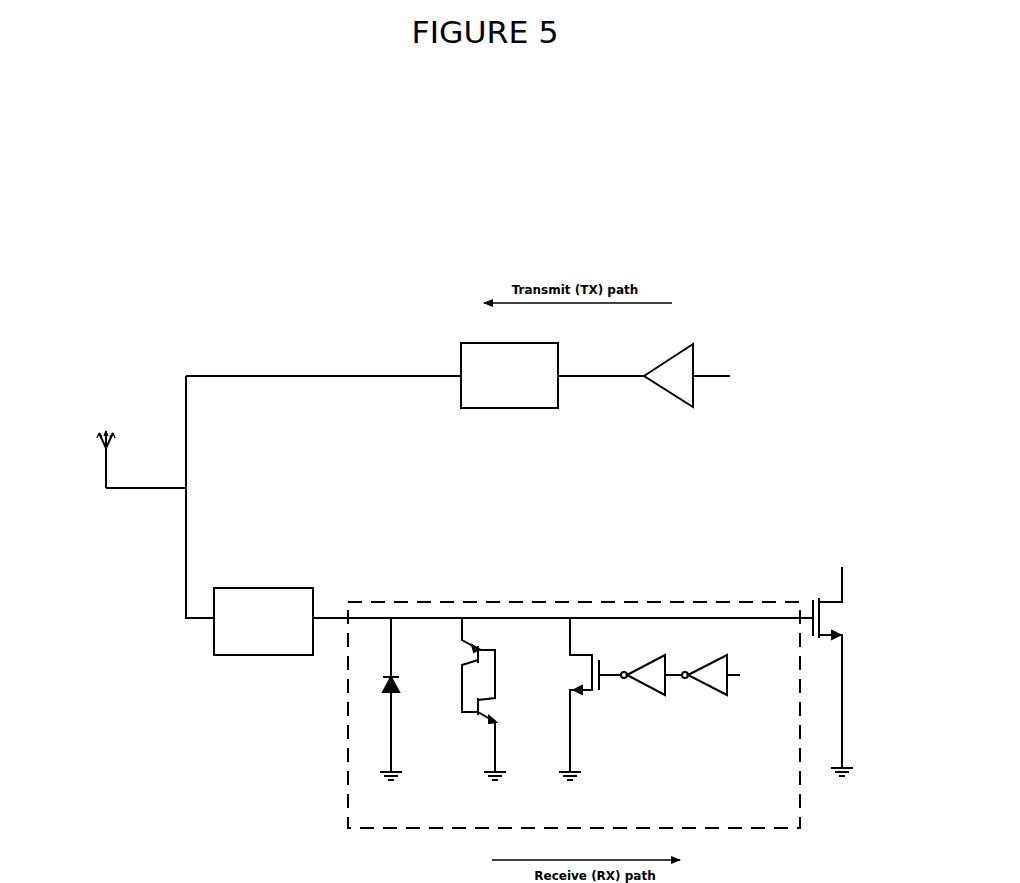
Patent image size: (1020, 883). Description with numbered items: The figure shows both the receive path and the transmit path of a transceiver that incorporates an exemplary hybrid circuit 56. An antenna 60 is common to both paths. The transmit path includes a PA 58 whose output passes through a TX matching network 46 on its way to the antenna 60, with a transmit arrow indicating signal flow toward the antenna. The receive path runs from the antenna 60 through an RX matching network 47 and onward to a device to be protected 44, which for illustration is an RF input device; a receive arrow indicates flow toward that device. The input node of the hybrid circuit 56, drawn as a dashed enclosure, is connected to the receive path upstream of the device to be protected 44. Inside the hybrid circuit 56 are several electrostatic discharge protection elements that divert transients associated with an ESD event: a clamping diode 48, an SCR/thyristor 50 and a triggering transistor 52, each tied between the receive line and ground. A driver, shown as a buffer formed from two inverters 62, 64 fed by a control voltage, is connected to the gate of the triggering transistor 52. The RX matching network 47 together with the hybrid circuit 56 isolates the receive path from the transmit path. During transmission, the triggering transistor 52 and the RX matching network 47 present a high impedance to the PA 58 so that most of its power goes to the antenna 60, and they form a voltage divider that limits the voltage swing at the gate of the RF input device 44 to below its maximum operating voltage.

The device to be protected 44 is at (847, 618).
The TX matching network 46 is at (515, 416).
The RX matching network 47 is at (265, 675).
The clamping diode 48 is at (408, 702).
The SCR/thyristor 50 is at (506, 697).
The triggering transistor 52 is at (590, 705).
The hybrid circuit 56 is at (322, 794).
The PA 58 is at (686, 413).
The antenna 60 is at (92, 462).
The inverter 62 is at (649, 697).
The inverter 64 is at (708, 697).